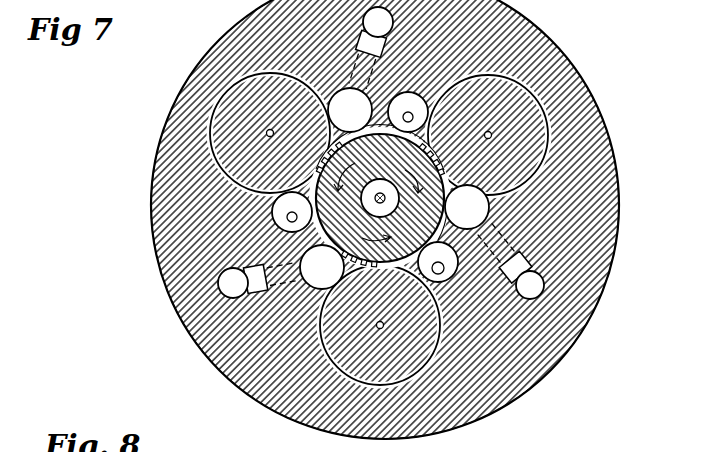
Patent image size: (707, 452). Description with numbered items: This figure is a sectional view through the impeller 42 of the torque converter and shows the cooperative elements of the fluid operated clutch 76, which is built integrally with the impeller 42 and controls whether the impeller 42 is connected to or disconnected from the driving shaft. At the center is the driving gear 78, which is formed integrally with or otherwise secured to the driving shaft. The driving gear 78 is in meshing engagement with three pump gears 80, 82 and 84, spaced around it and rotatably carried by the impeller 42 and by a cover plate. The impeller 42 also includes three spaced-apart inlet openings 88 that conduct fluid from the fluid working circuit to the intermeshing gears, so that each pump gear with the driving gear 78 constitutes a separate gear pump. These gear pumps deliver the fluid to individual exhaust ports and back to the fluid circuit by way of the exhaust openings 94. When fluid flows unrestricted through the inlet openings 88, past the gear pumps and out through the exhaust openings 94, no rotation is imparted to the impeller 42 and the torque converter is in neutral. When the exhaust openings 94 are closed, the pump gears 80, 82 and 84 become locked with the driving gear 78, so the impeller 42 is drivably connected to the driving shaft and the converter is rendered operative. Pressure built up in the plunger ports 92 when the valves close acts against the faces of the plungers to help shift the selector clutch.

The impeller 42 is at (572, 66).
The fluid operated clutch 76 is at (650, 211).
The driving gear 78 is at (345, 238).
The pump gear 80 is at (538, 140).
The pump gear 82 is at (230, 114).
The pump gear 84 is at (386, 390).
The inlet openings 88 is at (365, 187).
The plunger ports 92 is at (360, 118).
The exhaust openings 94 is at (386, 30).